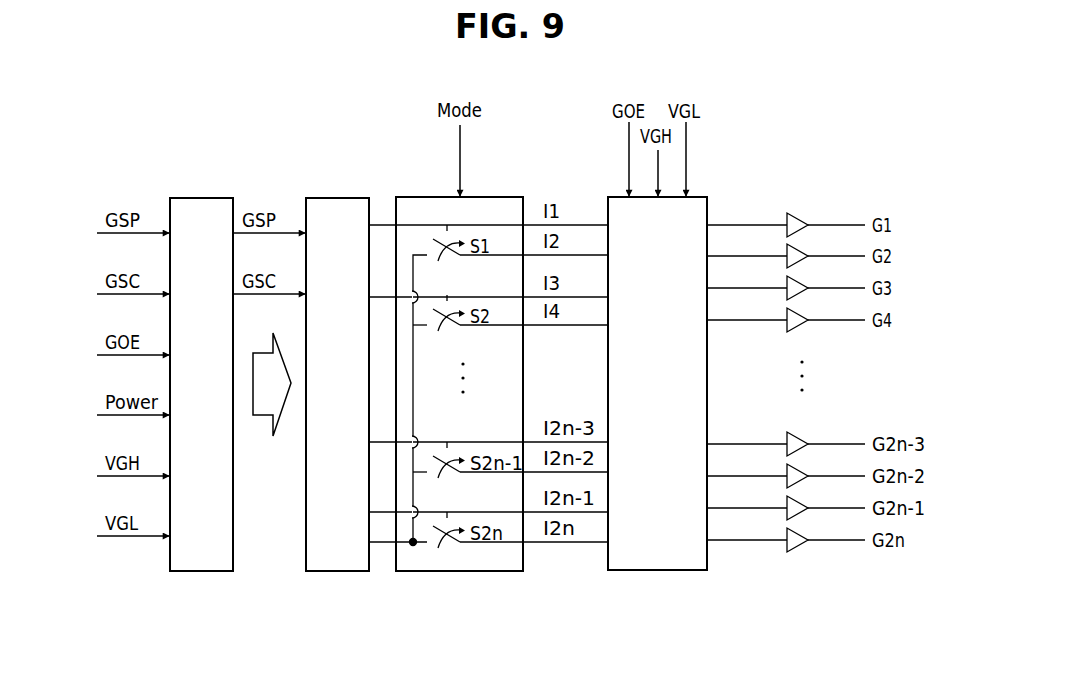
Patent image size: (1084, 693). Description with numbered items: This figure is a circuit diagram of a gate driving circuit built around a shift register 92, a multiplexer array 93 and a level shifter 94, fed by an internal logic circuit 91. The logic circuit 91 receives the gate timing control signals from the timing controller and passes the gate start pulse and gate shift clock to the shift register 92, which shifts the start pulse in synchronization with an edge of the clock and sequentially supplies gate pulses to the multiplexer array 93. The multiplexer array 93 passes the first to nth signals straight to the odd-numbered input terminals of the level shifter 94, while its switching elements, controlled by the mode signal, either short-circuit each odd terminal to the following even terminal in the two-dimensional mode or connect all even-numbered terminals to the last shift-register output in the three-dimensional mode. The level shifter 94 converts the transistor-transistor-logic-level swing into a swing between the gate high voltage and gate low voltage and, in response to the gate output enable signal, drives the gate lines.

The logic circuit 91 is at (216, 393).
The shift register 92 is at (352, 393).
The multiplexer array 93 is at (503, 197).
The level shifter 94 is at (673, 393).